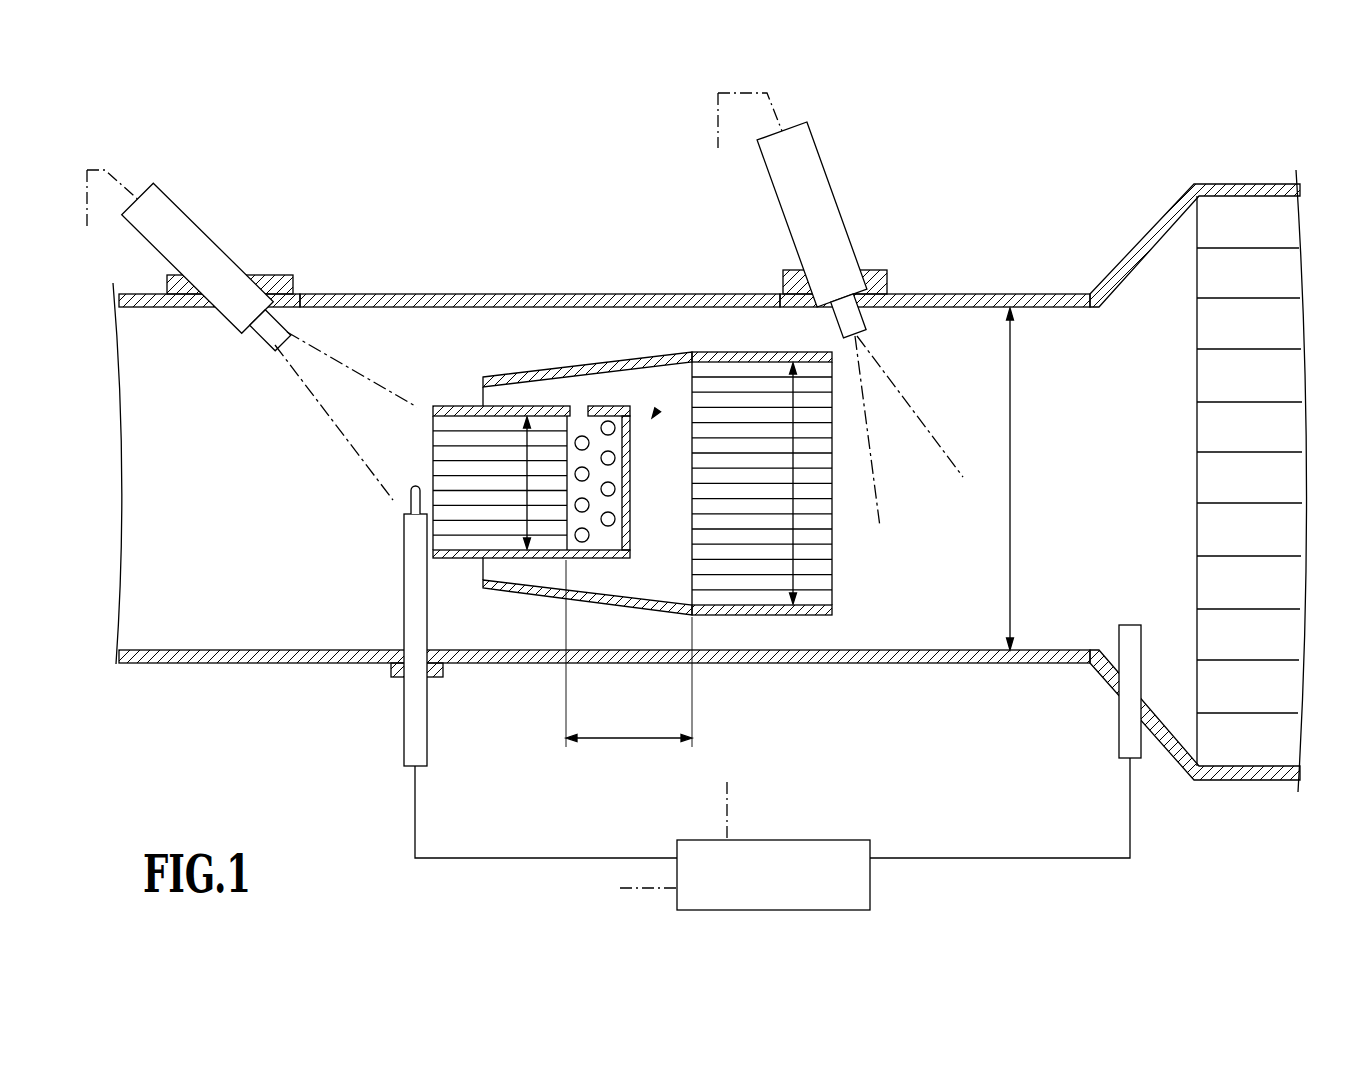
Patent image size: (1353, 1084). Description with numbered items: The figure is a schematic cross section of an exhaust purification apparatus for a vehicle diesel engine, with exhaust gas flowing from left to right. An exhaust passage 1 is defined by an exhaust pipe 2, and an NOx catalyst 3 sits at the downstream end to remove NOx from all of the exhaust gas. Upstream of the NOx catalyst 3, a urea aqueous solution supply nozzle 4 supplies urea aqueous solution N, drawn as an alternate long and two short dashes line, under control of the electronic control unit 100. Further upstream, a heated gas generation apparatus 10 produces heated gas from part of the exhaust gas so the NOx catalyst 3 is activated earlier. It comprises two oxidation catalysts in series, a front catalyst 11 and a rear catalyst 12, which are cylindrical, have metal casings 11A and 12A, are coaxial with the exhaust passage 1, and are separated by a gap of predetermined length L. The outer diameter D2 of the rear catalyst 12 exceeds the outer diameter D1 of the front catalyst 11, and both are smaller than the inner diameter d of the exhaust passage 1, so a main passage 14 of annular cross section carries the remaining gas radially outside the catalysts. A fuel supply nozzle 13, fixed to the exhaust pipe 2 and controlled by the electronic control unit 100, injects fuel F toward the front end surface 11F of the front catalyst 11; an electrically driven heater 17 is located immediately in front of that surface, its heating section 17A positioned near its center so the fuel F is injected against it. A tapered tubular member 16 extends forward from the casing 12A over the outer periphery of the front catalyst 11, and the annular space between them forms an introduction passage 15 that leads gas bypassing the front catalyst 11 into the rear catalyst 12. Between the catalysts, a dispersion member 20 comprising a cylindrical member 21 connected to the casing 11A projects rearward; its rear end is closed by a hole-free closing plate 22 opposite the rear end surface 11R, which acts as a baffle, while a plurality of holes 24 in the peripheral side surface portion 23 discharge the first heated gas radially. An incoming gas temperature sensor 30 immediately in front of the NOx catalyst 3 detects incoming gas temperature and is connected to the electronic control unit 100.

The exhaust passage 1 is at (188, 492).
The exhaust pipe 2 is at (343, 293).
The NOx catalyst 3 is at (1226, 264).
The urea aqueous solution supply nozzle 4 is at (818, 190).
The heated gas generation apparatus 10 is at (415, 335).
The front catalyst 11 is at (514, 446).
The casing 11A is at (467, 407).
The front end surface 11F is at (433, 450).
The rear end surface 11R is at (570, 465).
The rear catalyst 12 is at (760, 424).
The casing 12A is at (767, 372).
The fuel supply nozzle 13 is at (198, 236).
The main passage 14 is at (612, 317).
The introduction passage 15 is at (587, 360).
The tubular member 16 is at (585, 367).
The heater 17 is at (383, 626).
The heating section 17A is at (410, 500).
The dispersion member 20 is at (673, 364).
The cylindrical member 21 is at (652, 418).
The closing plate 22 is at (626, 502).
The peripheral side surface portion 23 is at (580, 560).
The holes 24 is at (592, 535).
The incoming gas temperature sensor 30 is at (1117, 723).
The electronic control unit 100 is at (818, 842).
The outer diameter of the front catalyst D1 is at (511, 483).
The outer diameter of the rear catalyst D2 is at (775, 483).
The inner diameter of the exhaust passage d is at (1000, 479).
The predetermined length L is at (629, 667).
The fuel F is at (327, 415).
The urea aqueous solution N is at (915, 403).